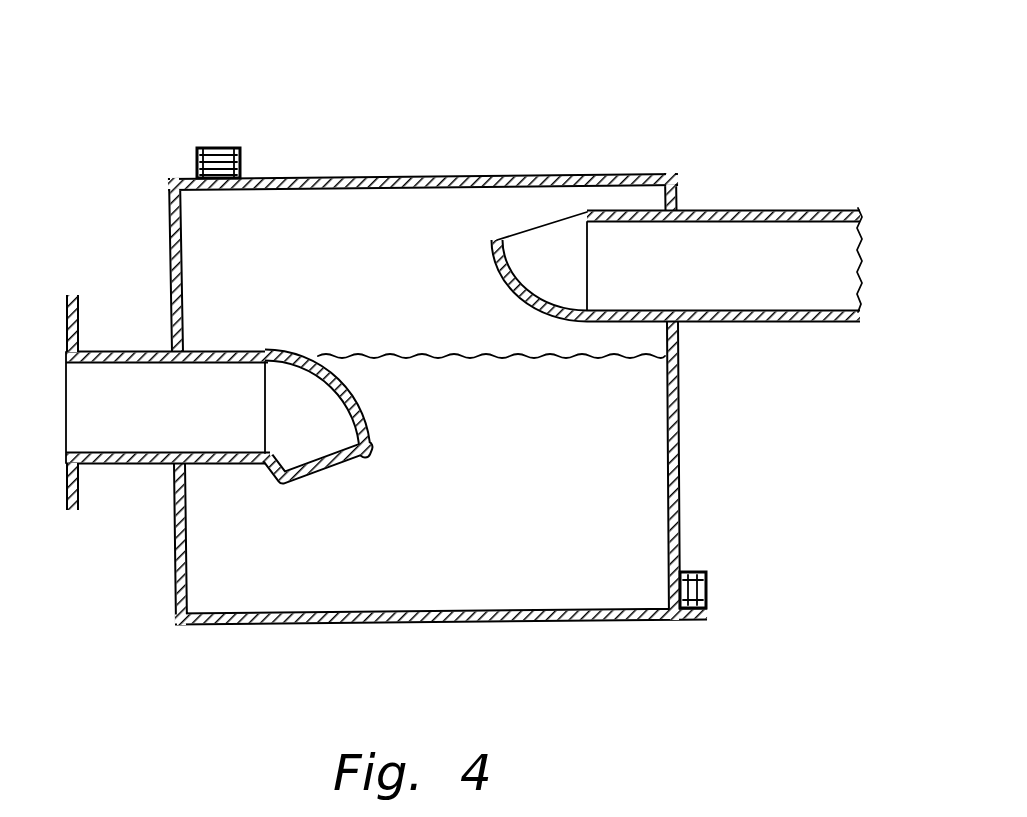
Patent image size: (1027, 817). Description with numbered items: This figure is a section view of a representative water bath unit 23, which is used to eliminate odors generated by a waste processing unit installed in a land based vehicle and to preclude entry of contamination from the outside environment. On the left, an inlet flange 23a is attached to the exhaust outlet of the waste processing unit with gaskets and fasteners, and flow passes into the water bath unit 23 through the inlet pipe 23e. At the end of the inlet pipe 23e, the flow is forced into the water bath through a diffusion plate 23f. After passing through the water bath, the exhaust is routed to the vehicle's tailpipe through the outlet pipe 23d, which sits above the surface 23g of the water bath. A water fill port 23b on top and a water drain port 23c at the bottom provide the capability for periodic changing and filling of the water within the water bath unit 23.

The water bath unit 23 is at (440, 622).
The inlet flange 23a is at (68, 297).
The water fill port 23b is at (212, 147).
The water drain port 23c is at (707, 590).
The outlet pipe 23d is at (730, 210).
The inlet pipe 23e is at (131, 463).
The diffusion plate 23f is at (308, 470).
The surface of the water bath 23g is at (541, 358).